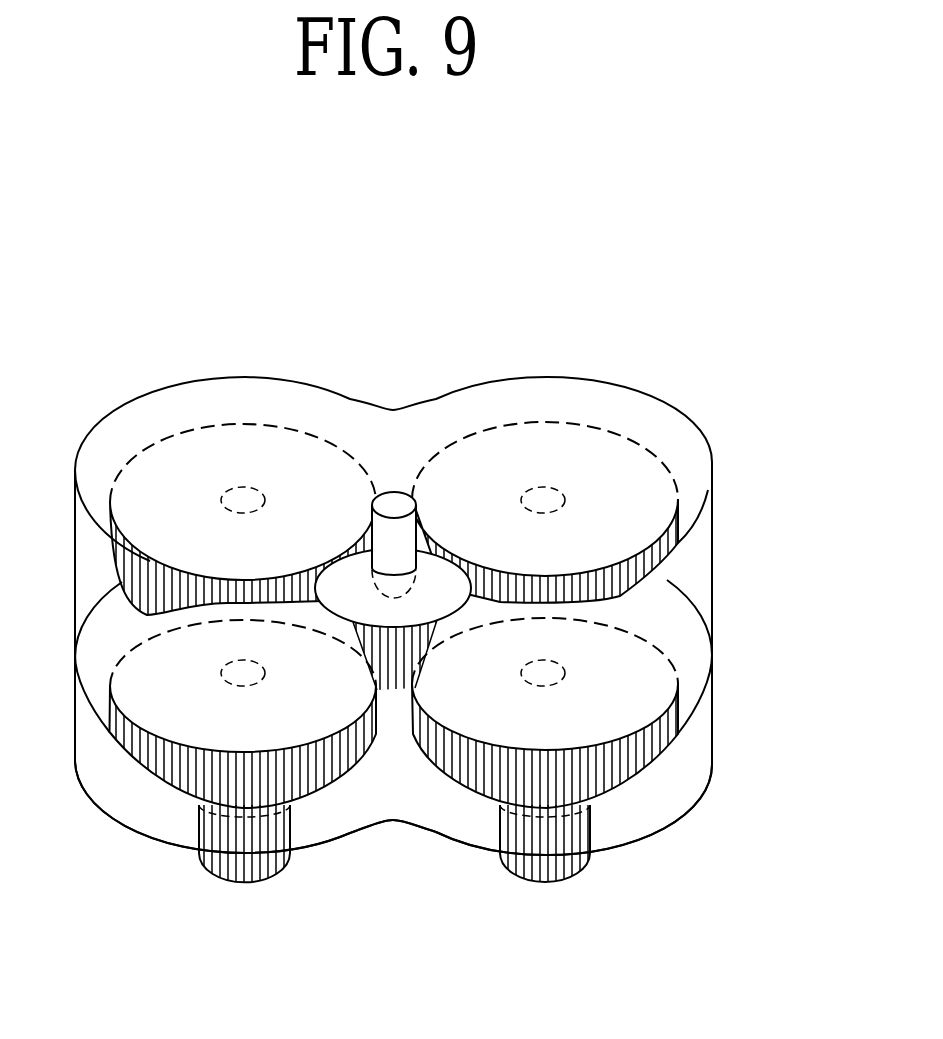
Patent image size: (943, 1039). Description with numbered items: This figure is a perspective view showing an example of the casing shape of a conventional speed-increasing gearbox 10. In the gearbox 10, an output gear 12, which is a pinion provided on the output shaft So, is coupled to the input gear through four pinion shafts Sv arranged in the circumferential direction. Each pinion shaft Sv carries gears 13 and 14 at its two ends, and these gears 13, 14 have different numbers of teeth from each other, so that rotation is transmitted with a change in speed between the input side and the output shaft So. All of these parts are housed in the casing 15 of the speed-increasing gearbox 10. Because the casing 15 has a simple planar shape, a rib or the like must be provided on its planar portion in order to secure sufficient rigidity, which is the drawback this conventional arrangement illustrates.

The speed-increasing gearbox 10 is at (696, 282).
The output gear 12 is at (418, 662).
The gear 13 is at (232, 885).
The gear 14 is at (178, 432).
The casing 15 is at (530, 376).
The output shaft So is at (400, 505).
The pinion shaft Sv is at (221, 500).